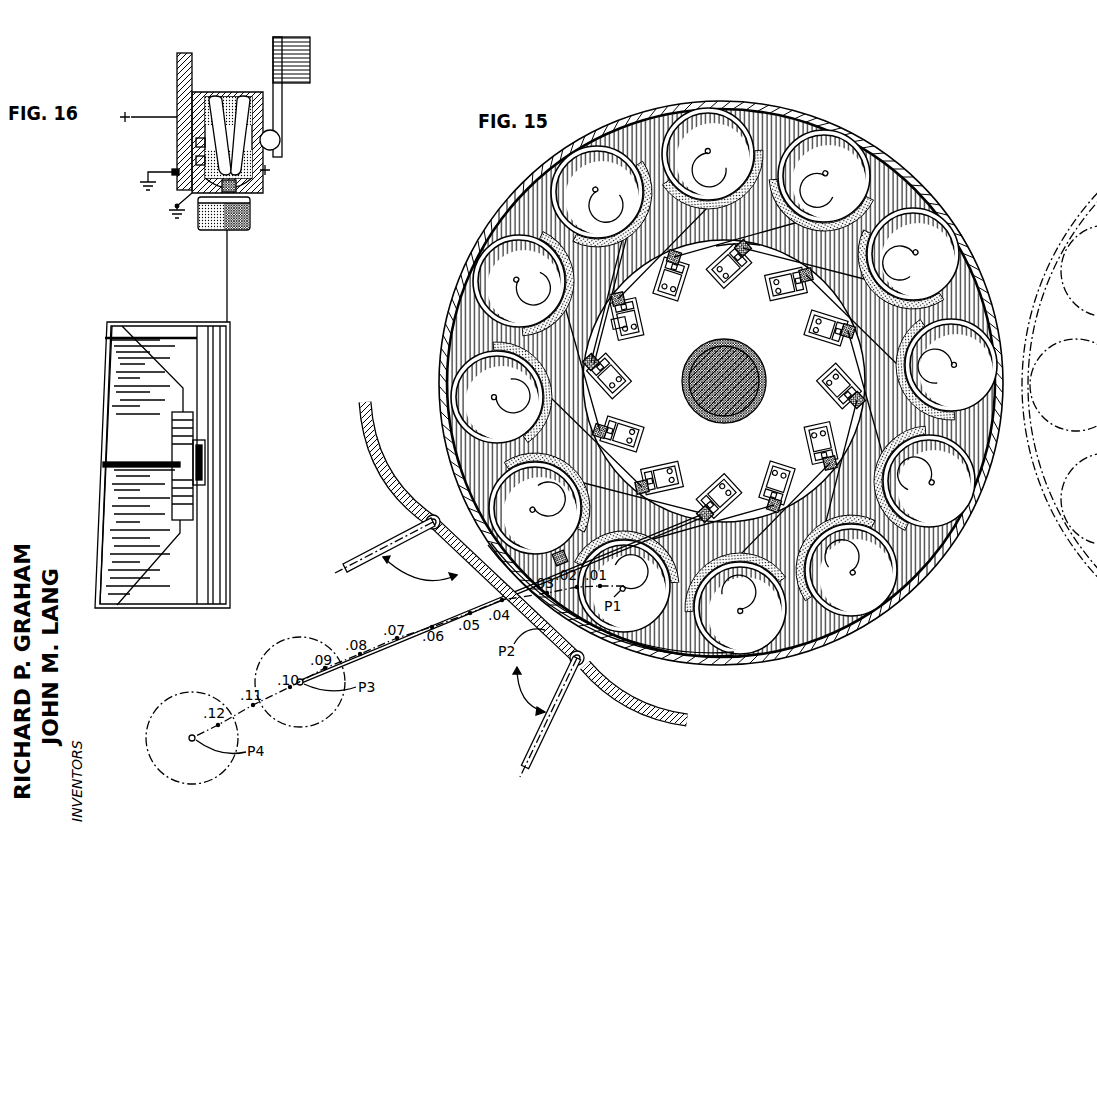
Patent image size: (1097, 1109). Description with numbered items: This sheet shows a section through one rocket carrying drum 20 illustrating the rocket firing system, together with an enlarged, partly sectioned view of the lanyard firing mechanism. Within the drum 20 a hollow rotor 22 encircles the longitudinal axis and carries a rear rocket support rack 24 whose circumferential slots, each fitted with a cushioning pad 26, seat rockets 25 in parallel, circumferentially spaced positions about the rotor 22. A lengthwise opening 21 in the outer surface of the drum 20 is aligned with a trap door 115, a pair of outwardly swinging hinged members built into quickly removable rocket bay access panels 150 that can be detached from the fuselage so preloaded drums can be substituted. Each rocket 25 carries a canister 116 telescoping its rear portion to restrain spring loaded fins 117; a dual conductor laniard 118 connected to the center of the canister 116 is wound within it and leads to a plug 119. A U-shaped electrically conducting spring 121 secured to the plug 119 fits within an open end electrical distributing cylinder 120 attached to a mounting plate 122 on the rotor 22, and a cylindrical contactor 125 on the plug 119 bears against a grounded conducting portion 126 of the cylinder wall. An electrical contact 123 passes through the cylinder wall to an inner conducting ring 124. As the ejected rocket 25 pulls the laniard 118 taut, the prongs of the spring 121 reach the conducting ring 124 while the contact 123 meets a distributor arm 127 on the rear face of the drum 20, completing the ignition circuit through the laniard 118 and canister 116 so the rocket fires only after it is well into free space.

In FIG. 15, the rocket carrying drum 20 is at (470, 263).
In FIG. 15, the lengthwise opening 21 is at (607, 644).
In FIG. 15, the hollow rotor 22 is at (765, 372).
In FIG. 15, the rear rocket support rack 24 is at (716, 246).
In FIG. 15, the rocket 25 is at (696, 183).
In FIG. 15, the pad 26 is at (680, 180).
In FIG. 15, the trap door 115 is at (452, 620).
In FIG. 16, the canister 116 is at (158, 321).
In FIG. 16, the spring loaded fins 117 is at (136, 433).
In FIG. 15, the dual conductor laniard 118 is at (632, 244).
In FIG. 16, the dual conductor laniard 118 is at (230, 258).
In FIG. 15, the plug 119 is at (613, 296).
In FIG. 16, the plug 119 is at (252, 216).
In FIG. 15, the electrical distributing cylinder 120 is at (636, 317).
In FIG. 16, the electrical distributing cylinder 120 is at (253, 178).
In FIG. 16, the U-shaped electrically conducting spring 121 is at (240, 96).
In FIG. 15, the mounting plate 122 is at (732, 314).
In FIG. 16, the mounting plate 122 is at (185, 61).
In FIG. 15, the electrical contact 123 is at (628, 334).
In FIG. 16, the electrical contact 123 is at (279, 134).
In FIG. 16, the inner conducting ring 124 is at (210, 145).
In FIG. 16, the cylindrical contactor 125 is at (254, 197).
In FIG. 16, the conducting portion 126 is at (210, 163).
In FIG. 16, the distributor arm 127 is at (283, 97).
In FIG. 15, the rocket bay access panels 150 is at (365, 455).